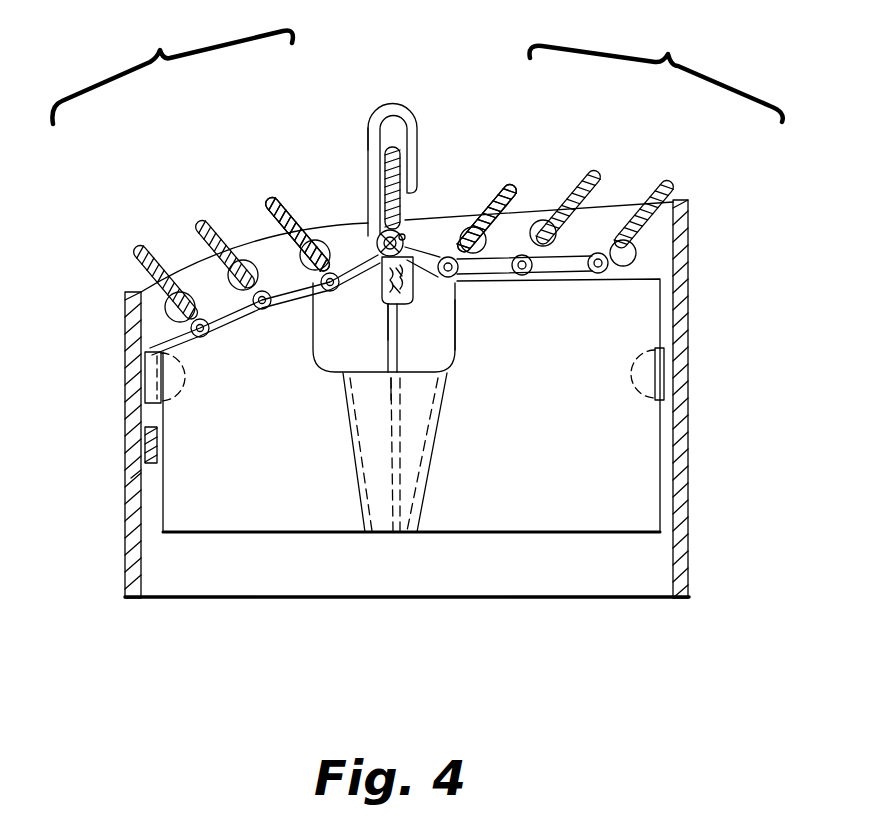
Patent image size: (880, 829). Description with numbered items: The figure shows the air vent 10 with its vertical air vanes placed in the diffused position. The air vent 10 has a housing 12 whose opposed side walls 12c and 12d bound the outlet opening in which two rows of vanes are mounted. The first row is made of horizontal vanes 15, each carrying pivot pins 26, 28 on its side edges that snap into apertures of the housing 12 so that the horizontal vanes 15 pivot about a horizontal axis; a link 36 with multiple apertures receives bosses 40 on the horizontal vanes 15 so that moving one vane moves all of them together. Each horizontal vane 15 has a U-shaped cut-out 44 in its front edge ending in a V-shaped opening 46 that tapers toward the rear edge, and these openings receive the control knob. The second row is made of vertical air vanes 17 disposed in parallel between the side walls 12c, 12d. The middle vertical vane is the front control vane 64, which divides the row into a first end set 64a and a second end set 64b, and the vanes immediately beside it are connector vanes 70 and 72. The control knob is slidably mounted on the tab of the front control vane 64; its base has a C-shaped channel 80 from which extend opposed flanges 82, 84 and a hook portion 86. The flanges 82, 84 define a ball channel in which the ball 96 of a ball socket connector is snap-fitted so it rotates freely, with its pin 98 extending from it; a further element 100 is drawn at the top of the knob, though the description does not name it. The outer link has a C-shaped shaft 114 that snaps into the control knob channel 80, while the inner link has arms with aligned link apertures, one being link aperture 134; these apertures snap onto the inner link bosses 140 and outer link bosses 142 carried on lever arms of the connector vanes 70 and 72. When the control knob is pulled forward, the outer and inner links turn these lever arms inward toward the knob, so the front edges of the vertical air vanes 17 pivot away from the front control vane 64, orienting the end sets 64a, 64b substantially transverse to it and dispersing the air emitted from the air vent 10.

The air vent 10 is at (96, 665).
The housing 12 is at (694, 257).
The side wall 12c is at (692, 459).
The side wall 12d is at (125, 453).
The horizontal vane 15 is at (484, 537).
The vertical air vane 17 is at (128, 256).
The pivot pin 26 is at (669, 368).
The pivot pin 28 is at (140, 380).
The link 36 is at (136, 487).
The boss 40 is at (157, 445).
The U-shaped cut-out 44 is at (453, 336).
The V-shaped opening 46 is at (362, 463).
The front control vane 64 is at (377, 140).
The first end set 64a is at (656, 70).
The second end set 64b is at (172, 69).
The connector vane 70 is at (513, 183).
The connector vane 72 is at (263, 203).
The C-shaped channel 80 is at (378, 296).
The flange 82 is at (453, 343).
The flange 84 is at (381, 346).
The hook portion 86 is at (363, 131).
The ball 96 is at (414, 283).
The pin 98 is at (413, 366).
The loop 100 is at (398, 122).
The C-shaped shaft 114 is at (376, 241).
The link aperture 134 is at (413, 226).
The inner link boss 140 is at (257, 309).
The outer link boss 142 is at (313, 306).